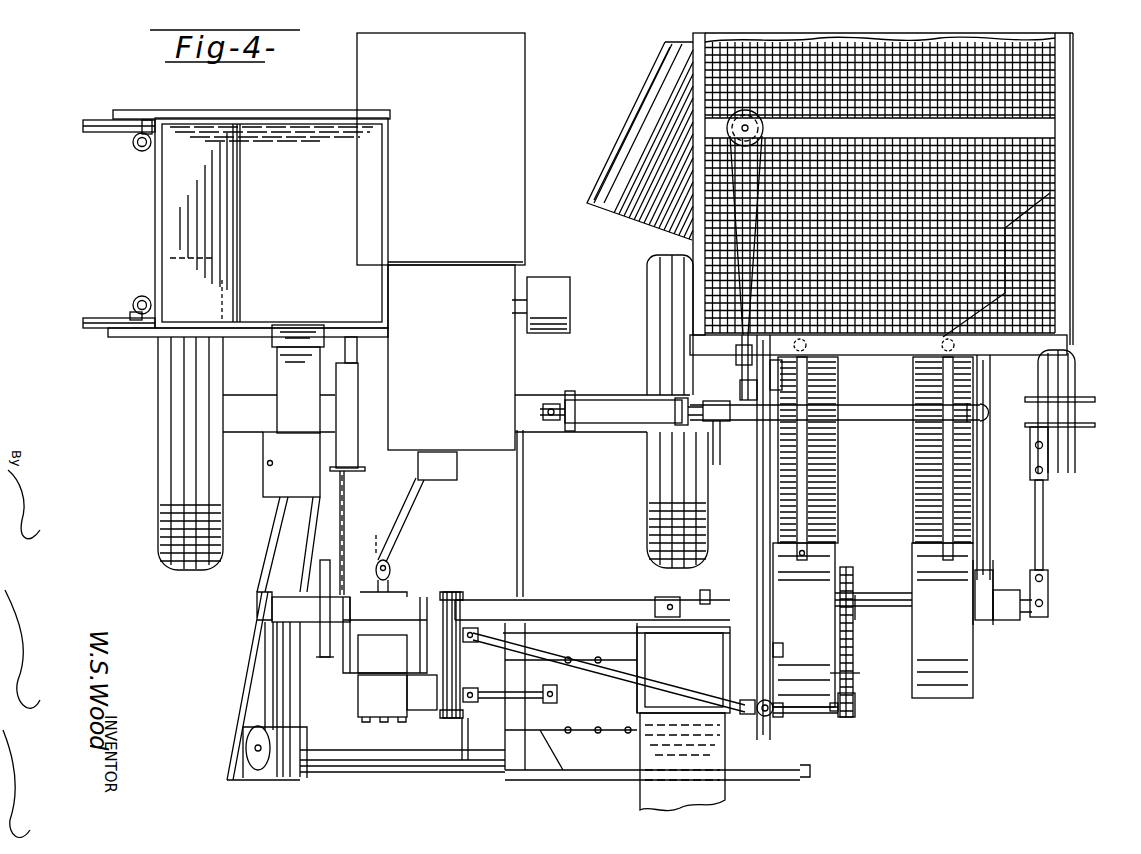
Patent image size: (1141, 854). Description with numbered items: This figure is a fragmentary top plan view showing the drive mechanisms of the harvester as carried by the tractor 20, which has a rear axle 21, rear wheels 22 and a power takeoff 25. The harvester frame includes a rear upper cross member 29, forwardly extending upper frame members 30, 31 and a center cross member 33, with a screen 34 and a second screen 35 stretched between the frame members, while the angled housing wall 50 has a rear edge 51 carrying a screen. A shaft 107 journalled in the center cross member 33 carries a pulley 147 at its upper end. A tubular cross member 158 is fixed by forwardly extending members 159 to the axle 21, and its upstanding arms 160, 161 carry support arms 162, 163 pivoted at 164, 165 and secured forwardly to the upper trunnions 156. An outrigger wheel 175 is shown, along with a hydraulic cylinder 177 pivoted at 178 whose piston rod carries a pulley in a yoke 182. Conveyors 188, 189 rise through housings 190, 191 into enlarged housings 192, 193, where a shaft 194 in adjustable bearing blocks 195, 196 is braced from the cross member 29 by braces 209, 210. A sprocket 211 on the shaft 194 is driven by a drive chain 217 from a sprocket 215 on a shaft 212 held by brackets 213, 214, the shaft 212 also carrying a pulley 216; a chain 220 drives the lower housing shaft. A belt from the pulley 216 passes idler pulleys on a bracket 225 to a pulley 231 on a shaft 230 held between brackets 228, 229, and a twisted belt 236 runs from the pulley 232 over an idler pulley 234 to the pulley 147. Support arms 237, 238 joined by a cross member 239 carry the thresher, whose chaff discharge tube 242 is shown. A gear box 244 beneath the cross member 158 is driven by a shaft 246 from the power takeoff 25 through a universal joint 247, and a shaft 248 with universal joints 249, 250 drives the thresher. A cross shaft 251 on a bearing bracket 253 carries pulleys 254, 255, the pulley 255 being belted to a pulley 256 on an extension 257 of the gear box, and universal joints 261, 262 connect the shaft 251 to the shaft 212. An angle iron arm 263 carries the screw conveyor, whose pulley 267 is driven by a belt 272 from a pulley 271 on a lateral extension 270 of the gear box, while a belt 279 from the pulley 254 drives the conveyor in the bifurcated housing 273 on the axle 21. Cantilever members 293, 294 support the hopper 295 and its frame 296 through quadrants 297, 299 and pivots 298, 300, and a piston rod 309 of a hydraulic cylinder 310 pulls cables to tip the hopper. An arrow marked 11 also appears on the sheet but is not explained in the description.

The frame member 11 is at (350, 410).
The tractor structure 20 is at (540, 220).
The rear axle 21 is at (527, 393).
The rear wheels 22 is at (158, 520).
The power takeoff 25 is at (448, 468).
The rear upper cross member 29 is at (880, 365).
The upper frame member 30 is at (1063, 162).
The upper frame member 31 is at (670, 246).
The center cross member 33 is at (1030, 130).
The screen 34 is at (1053, 228).
The second screen 35 is at (1040, 88).
The angle wall 50 is at (620, 142).
The rear edge 51 is at (590, 208).
The shaft 107 is at (763, 128).
The pulley 147 is at (758, 113).
The upper trunnions 156 is at (808, 345).
The tubular cross member 158 is at (592, 598).
The forward extending members 159 is at (523, 500).
The upstanding arm 160 is at (1010, 623).
The upstanding arm 161 is at (718, 585).
The support arm 162 is at (992, 553).
The support arm 163 is at (757, 540).
The pivot 164 is at (990, 625).
The pivot 165 is at (710, 595).
The wheel 175 is at (1078, 473).
The hydraulic cylinder 177 is at (590, 404).
The pivot 178 is at (553, 402).
The yoke 182 is at (722, 450).
The conveyor 188 is at (843, 490).
The conveyor 189 is at (838, 450).
The housing 190 is at (843, 527).
The housing 191 is at (912, 490).
The enlarged housing 192 is at (835, 675).
The enlarged housing 193 is at (973, 700).
The shaft 194 is at (873, 616).
The adjustable bearing block 195 is at (968, 616).
The adjustable bearing block 196 is at (775, 605).
The brace 209 is at (800, 448).
The brace 210 is at (940, 470).
The sprocket 211 is at (840, 597).
The shaft 212 is at (805, 713).
The bracket 213 is at (780, 717).
The bracket 214 is at (838, 710).
The sprocket 215 is at (855, 705).
The pulley 216 is at (745, 700).
The drive chain 217 is at (853, 663).
The chain 220 is at (716, 421).
The bracket 225 is at (783, 650).
The bracket 228 is at (785, 330).
The second bracket 229 is at (705, 362).
The shaft 230 is at (768, 305).
The sprocket 231 is at (775, 320).
The sprocket 232 is at (735, 380).
The idler pulley 234 is at (762, 290).
The belt 236 is at (760, 255).
The support arm 237 is at (520, 633).
The support arm 238 is at (768, 716).
The cross member 239 is at (567, 780).
The chaff discharge tube 242 is at (745, 797).
The gear box 244 is at (376, 662).
The shaft 246 is at (413, 527).
The universal joint 247 is at (377, 562).
The shaft 248 is at (485, 685).
The universal joint 249 is at (490, 775).
The universal joint 250 is at (557, 690).
The cross shaft 251 is at (380, 622).
The bearing bracket 253 is at (405, 590).
The pulley 254 is at (322, 675).
The pulley 255 is at (460, 600).
The pulley 256 is at (462, 718).
The extension 257 is at (425, 695).
The universal joint 261 is at (490, 622).
The universal joint 262 is at (740, 745).
The angle iron arm 263 is at (290, 742).
The pulley 267 is at (252, 726).
The lateral extension 270 is at (285, 598).
The pulley 271 is at (262, 605).
The belt 272 is at (262, 698).
The bifurcated housing 273 is at (290, 480).
The belt 279 is at (320, 547).
The cantilever member 293 is at (140, 152).
The cantilever member 294 is at (138, 300).
The hopper 295 is at (322, 190).
The frame 296 is at (272, 110).
The quadrant 297 is at (105, 134).
The pivot 298 is at (148, 120).
The quadrant 299 is at (90, 316).
The pivot 300 is at (132, 314).
The piston rod 309 is at (360, 357).
The hydraulic cylinder 310 is at (358, 438).